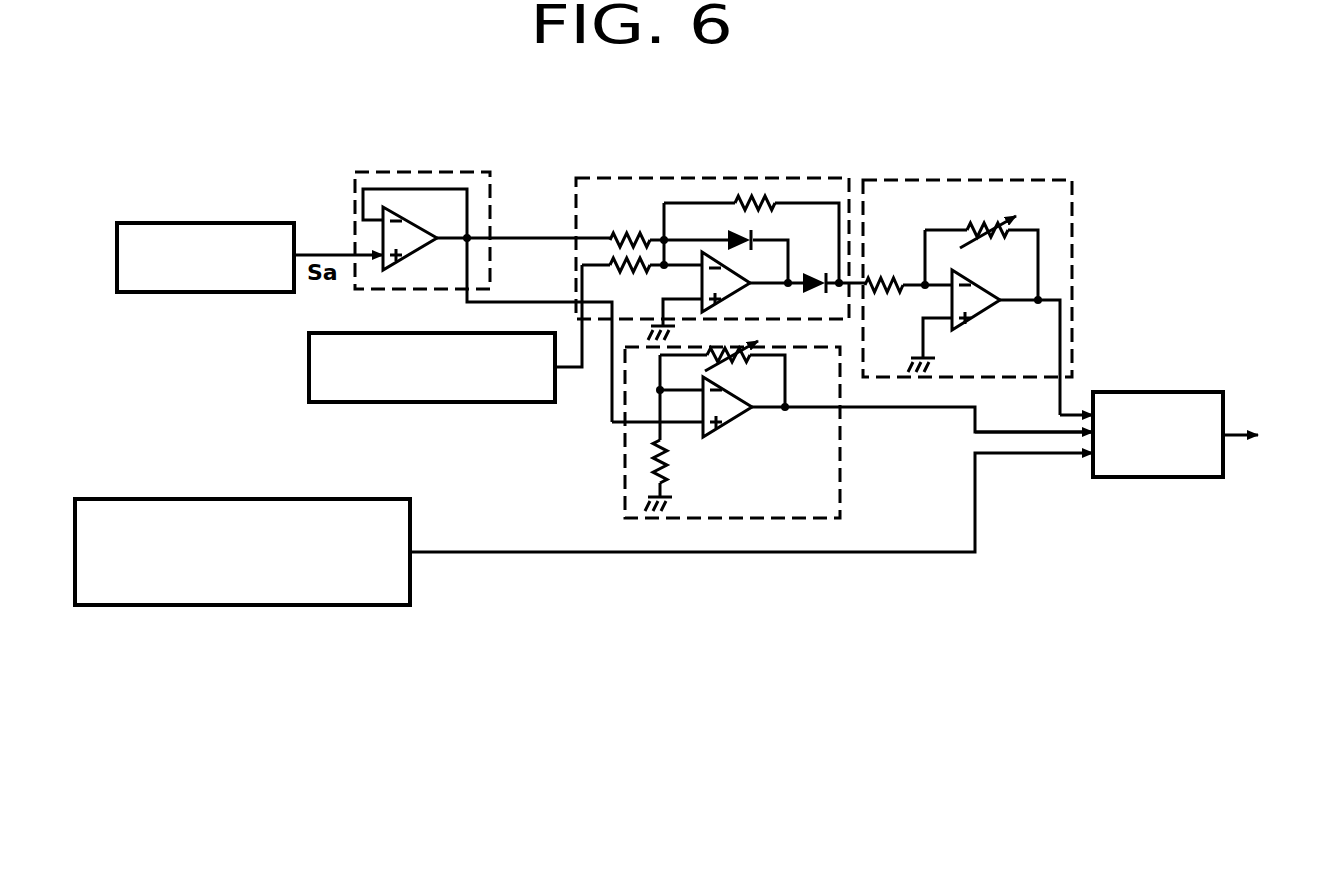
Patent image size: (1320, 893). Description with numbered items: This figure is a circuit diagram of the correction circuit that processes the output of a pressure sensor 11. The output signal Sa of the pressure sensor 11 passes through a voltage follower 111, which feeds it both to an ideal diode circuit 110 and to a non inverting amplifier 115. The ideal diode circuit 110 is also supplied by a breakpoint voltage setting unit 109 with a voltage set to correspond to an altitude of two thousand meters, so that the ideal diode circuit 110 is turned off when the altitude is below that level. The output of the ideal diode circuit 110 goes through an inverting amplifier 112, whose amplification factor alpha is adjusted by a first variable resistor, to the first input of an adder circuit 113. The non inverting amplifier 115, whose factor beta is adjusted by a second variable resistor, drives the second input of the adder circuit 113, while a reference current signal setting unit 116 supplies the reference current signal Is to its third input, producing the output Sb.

The pressure sensor 11 is at (210, 223).
The voltage follower 111 is at (390, 172).
The ideal diode circuit 110 is at (730, 178).
The breakpoint voltage setting unit 109 is at (428, 402).
The non inverting amplifier 115 is at (841, 453).
The inverting amplifier 112 is at (980, 180).
The adder circuit 113 is at (1145, 392).
The reference current signal setting unit 116 is at (150, 499).